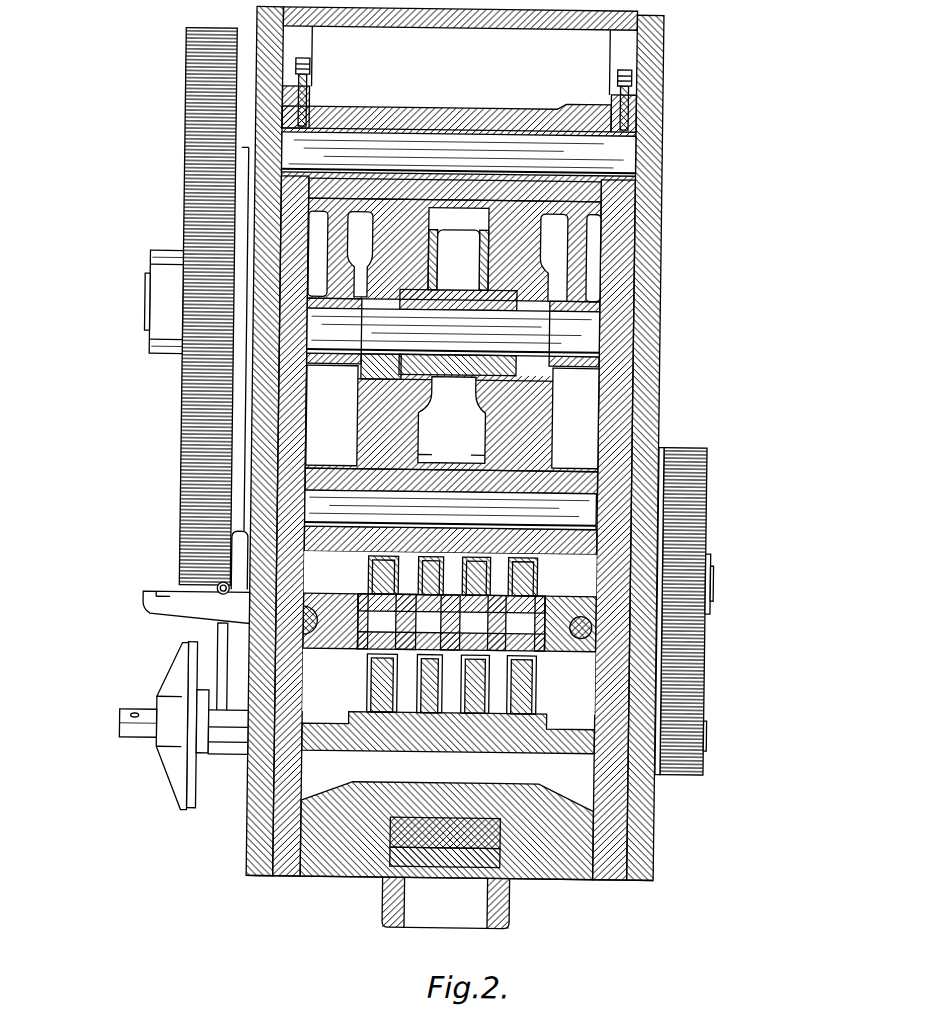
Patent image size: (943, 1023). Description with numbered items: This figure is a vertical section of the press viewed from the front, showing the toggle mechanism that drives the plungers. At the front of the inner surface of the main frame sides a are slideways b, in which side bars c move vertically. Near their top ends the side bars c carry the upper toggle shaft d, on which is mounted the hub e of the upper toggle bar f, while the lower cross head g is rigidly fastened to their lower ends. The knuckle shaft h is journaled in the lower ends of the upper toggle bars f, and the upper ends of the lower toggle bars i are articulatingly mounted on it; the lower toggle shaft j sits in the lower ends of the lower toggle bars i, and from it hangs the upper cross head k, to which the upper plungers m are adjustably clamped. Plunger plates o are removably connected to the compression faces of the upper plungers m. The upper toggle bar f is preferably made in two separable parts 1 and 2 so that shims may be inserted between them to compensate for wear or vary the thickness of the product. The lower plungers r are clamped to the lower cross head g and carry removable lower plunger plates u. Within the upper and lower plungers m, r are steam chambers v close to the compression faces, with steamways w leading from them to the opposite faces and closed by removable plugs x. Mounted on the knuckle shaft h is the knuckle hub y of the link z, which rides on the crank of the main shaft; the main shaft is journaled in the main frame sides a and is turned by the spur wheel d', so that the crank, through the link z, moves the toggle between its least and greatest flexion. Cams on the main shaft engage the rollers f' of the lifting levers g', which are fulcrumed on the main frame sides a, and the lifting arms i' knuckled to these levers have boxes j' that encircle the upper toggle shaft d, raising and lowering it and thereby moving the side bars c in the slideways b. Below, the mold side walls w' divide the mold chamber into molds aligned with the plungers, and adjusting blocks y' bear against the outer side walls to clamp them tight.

The main frame sides a is at (658, 291).
The slideways b is at (300, 77).
The side bars c is at (620, 211).
The upper toggle shaft d is at (495, 155).
The spur wheel d' is at (188, 306).
The hub e is at (451, 114).
The upper toggle bar f is at (619, 258).
The rollers f' is at (246, 432).
The lower cross head g is at (394, 845).
The lifting levers g' is at (547, 362).
The knuckle shaft h is at (518, 339).
The lower toggle bars i is at (572, 422).
The lifting arms i' is at (218, 303).
The lower toggle shaft j is at (525, 512).
The boxes j' is at (662, 114).
The upper cross head k is at (330, 543).
The upper plungers m is at (539, 571).
The plunger plates o is at (541, 603).
The lower plungers r is at (381, 691).
The lower plunger plates u is at (375, 640).
The steam chambers v is at (500, 660).
The steamways w is at (361, 574).
The mold side walls w' is at (666, 669).
The removable plugs x is at (543, 706).
The knuckle hub y is at (364, 362).
The adjusting blocks y' is at (714, 612).
The link z is at (325, 255).
The separable part of upper toggle bar 1 is at (523, 241).
The separable part of upper toggle bar 2 is at (589, 195).